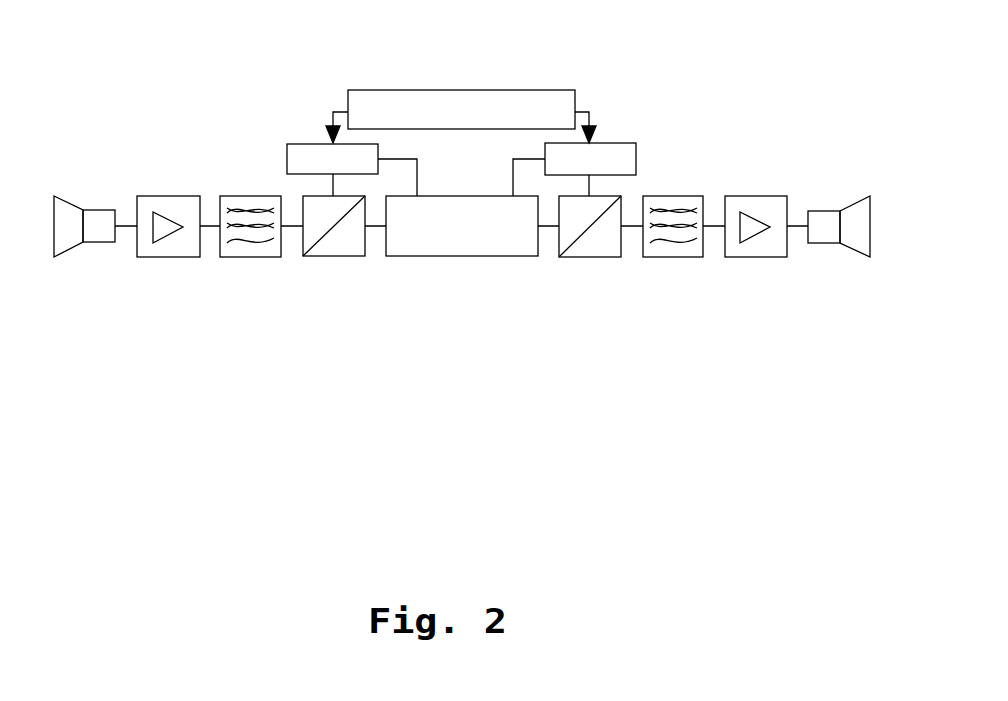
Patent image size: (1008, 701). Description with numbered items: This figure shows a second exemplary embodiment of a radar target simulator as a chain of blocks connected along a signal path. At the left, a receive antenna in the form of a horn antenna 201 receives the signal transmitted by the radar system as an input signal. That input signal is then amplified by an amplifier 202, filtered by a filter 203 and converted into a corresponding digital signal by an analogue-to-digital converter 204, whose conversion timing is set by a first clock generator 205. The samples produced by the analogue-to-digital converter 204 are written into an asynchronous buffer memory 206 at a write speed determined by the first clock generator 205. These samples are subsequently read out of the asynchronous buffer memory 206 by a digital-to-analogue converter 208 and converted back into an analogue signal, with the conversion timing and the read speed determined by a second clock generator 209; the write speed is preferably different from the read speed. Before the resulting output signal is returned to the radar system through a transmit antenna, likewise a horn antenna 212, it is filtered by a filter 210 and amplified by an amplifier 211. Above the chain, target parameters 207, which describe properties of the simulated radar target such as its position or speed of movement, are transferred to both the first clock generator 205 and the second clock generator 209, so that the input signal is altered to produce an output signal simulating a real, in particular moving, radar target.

The horn antenna 201 is at (68, 192).
The amplifier 202 is at (168, 205).
The filter 203 is at (235, 193).
The analogue-to-digital converter 204 is at (327, 250).
The first clock generator 205 is at (303, 147).
The asynchronous buffer memory 206 is at (515, 250).
The target parameters 207 is at (515, 100).
The digital-to-analogue converter 208 is at (580, 250).
The second clock generator 209 is at (625, 142).
The filter 210 is at (677, 203).
The amplifier 211 is at (760, 203).
The horn antenna 212 is at (817, 215).